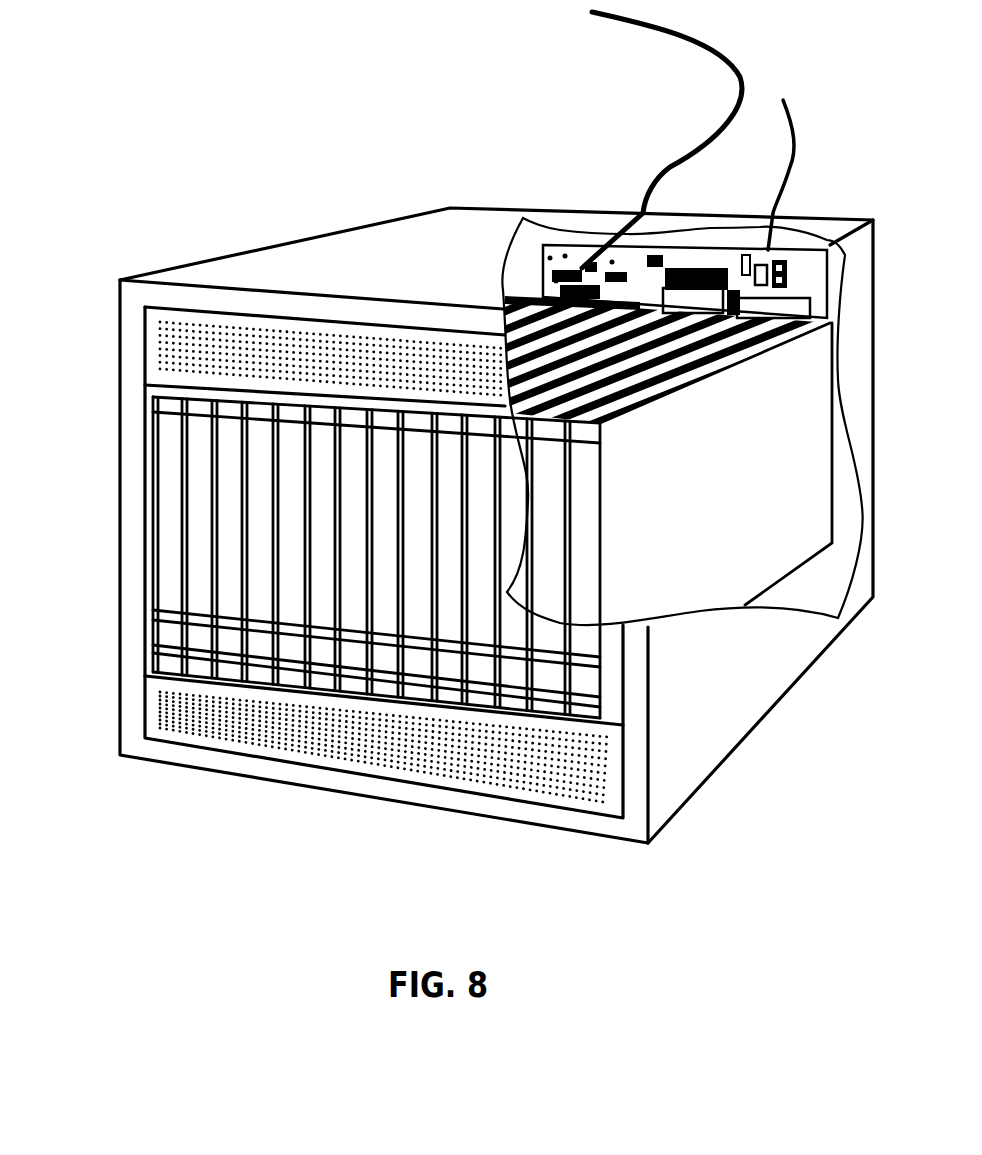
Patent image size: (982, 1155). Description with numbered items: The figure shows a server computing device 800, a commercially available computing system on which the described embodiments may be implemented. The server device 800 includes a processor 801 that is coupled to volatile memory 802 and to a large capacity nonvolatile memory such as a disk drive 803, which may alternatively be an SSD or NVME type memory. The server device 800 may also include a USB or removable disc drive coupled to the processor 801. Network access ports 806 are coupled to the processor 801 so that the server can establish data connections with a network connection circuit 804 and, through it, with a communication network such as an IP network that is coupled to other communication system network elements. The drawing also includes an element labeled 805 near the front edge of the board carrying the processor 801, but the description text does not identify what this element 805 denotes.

The server computing device 800 is at (352, 229).
The processor 801 is at (698, 300).
The volatile memory 802 is at (798, 307).
The disk drive 803 is at (230, 478).
The network connection circuit 804 is at (742, 82).
The board edge bracket 805 is at (543, 296).
The network access ports 806 is at (588, 262).